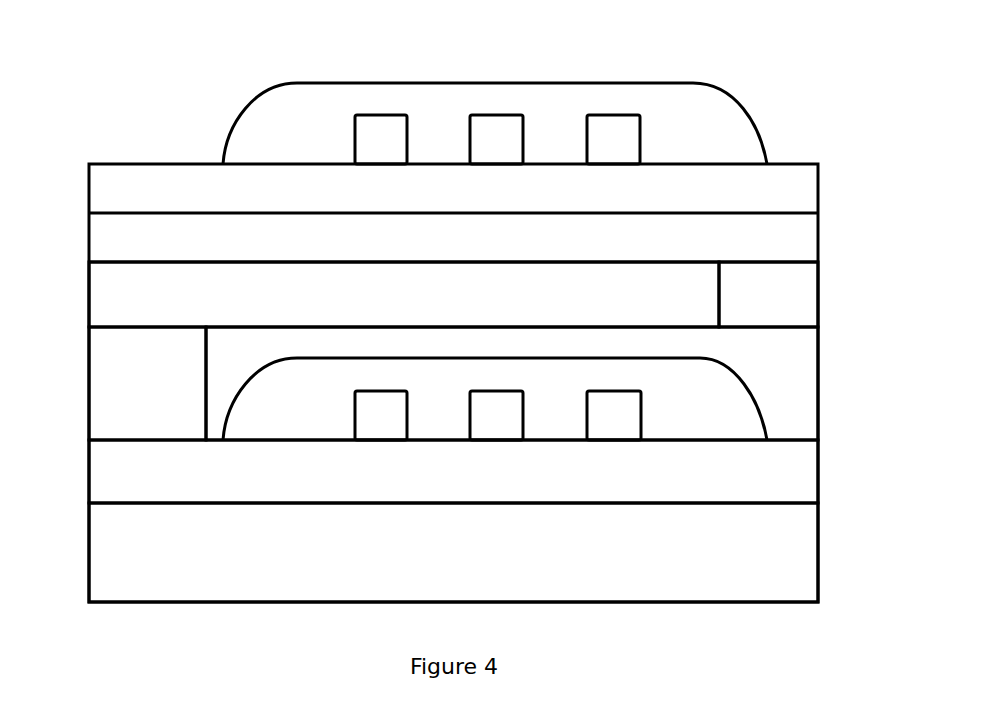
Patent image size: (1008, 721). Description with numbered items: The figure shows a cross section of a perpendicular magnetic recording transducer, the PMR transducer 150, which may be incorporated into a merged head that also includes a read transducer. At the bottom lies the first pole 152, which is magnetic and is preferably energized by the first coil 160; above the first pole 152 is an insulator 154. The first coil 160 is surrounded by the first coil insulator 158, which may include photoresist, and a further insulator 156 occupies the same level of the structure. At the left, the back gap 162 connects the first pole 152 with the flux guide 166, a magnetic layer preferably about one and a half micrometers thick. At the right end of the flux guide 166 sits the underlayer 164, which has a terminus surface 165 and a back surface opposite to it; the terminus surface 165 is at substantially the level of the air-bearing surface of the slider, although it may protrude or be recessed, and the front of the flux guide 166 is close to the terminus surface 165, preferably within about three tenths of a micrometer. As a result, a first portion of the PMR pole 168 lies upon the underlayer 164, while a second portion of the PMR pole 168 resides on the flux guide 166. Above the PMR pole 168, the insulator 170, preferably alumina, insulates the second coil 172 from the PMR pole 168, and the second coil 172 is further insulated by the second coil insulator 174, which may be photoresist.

The PMR transducer 150 is at (478, 28).
The first pole 152 is at (88, 570).
The insulator 154 is at (819, 483).
The insulator 156 is at (819, 424).
The first coil insulator 158 is at (757, 408).
The first coil 160 is at (412, 440).
The back gap 162 is at (88, 423).
The underlayer 164 is at (750, 262).
The terminus surface 165 is at (832, 293).
The flux guide 166 is at (88, 278).
The PMR pole 168 is at (88, 245).
The insulator 170 is at (157, 163).
The second coil 172 is at (602, 115).
The second coil insulator 174 is at (748, 112).